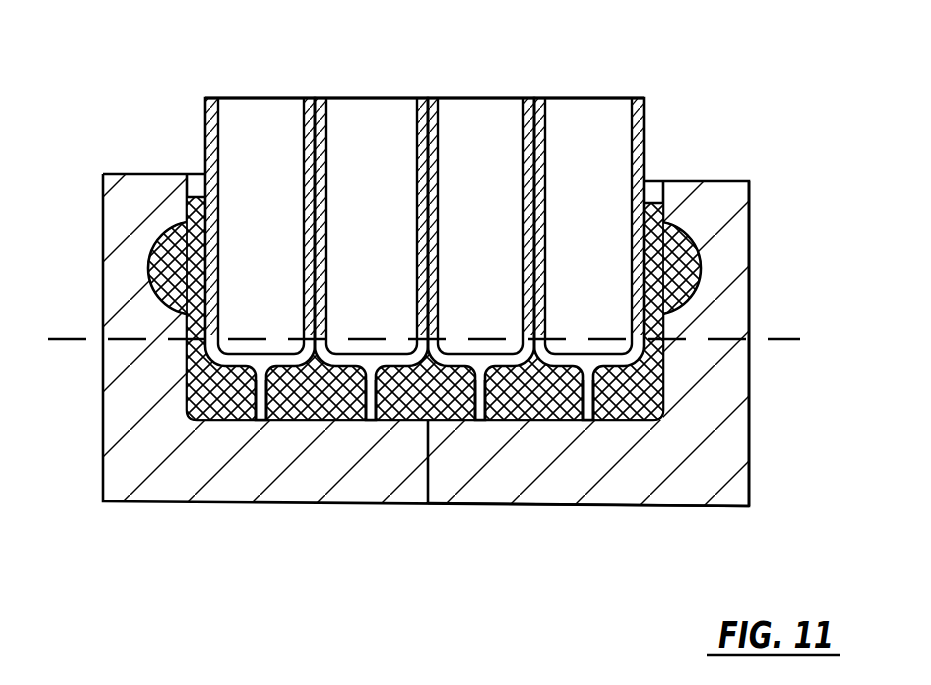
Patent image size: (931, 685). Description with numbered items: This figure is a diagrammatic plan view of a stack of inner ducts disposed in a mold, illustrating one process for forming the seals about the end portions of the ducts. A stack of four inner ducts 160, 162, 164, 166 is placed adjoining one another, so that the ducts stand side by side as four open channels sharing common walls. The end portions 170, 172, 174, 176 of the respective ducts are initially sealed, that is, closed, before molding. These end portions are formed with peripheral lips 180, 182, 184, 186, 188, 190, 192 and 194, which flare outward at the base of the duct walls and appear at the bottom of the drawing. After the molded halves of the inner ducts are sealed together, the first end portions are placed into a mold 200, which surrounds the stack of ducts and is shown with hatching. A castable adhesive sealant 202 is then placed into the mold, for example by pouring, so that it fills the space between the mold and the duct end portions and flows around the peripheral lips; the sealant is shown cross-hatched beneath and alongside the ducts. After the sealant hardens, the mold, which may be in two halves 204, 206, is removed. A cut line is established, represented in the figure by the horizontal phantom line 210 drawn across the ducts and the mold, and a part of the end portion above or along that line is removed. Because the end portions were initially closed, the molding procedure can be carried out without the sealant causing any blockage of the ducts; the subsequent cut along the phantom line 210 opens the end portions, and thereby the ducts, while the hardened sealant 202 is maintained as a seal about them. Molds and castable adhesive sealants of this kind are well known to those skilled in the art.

The inner duct 160 is at (250, 221).
The inner duct 162 is at (361, 221).
The inner duct 164 is at (469, 221).
The inner duct 166 is at (578, 221).
The end portion 170 is at (310, 265).
The end portion 172 is at (415, 243).
The end portion 174 is at (523, 273).
The end portion 176 is at (632, 253).
The peripheral lip 180 is at (258, 422).
The peripheral lip 182 is at (268, 422).
The peripheral lip 184 is at (365, 422).
The peripheral lip 186 is at (380, 422).
The peripheral lip 188 is at (473, 422).
The peripheral lip 190 is at (488, 422).
The peripheral lip 192 is at (583, 422).
The peripheral lip 194 is at (597, 422).
The mold 200 is at (753, 442).
The castable adhesive sealant 202 is at (652, 197).
The mold half 204 is at (122, 411).
The mold half 206 is at (733, 490).
The horizontal phantom line 210 is at (785, 339).